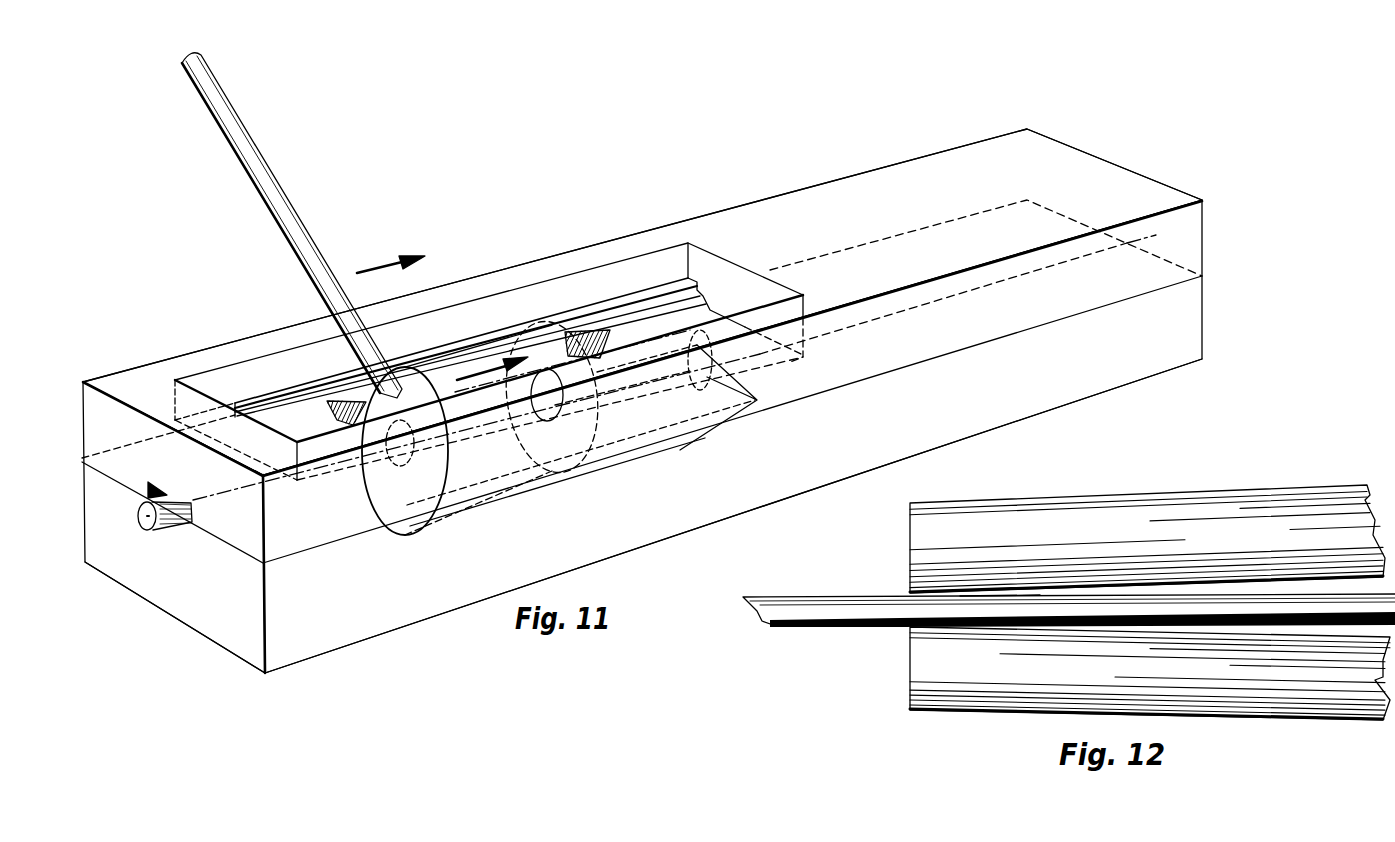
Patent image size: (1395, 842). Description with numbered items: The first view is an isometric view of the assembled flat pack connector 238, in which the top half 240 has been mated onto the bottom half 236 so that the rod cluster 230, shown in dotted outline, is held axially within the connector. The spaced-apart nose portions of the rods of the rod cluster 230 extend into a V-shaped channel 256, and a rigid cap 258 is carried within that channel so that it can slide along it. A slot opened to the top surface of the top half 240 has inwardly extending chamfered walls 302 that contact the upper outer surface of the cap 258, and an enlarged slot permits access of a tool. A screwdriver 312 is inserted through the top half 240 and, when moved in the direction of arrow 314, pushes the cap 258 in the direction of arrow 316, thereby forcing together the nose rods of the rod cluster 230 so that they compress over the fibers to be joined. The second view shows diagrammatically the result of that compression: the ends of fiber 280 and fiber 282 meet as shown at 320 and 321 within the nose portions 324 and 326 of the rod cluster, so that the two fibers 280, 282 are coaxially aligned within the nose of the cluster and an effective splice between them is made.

In FIG. 11, the rod cluster 230 is at (724, 330).
In FIG. 11, the bottom half 236 is at (1198, 326).
In FIG. 11, the flat pack connector 238 is at (1243, 192).
In FIG. 11, the top half 240 is at (1199, 243).
In FIG. 11, the V-shaped channel 256 is at (588, 332).
In FIG. 11, the rigid cap 258 is at (477, 338).
In FIG. 11, the chamfered walls 302 is at (243, 405).
In FIG. 11, the screwdriver 312 is at (257, 156).
In FIG. 11, the arrow 314 is at (375, 262).
In FIG. 11, the arrow 316 is at (479, 374).
In FIG. 12, the fiber 280 is at (793, 624).
In FIG. 12, the fiber 282 is at (1233, 587).
In FIG. 12, the fiber end meeting point 320 is at (975, 626).
In FIG. 12, the fiber end meeting point 321 is at (985, 615).
In FIG. 12, the nose portion 324 is at (1147, 539).
In FIG. 12, the nose portion 326 is at (1150, 673).